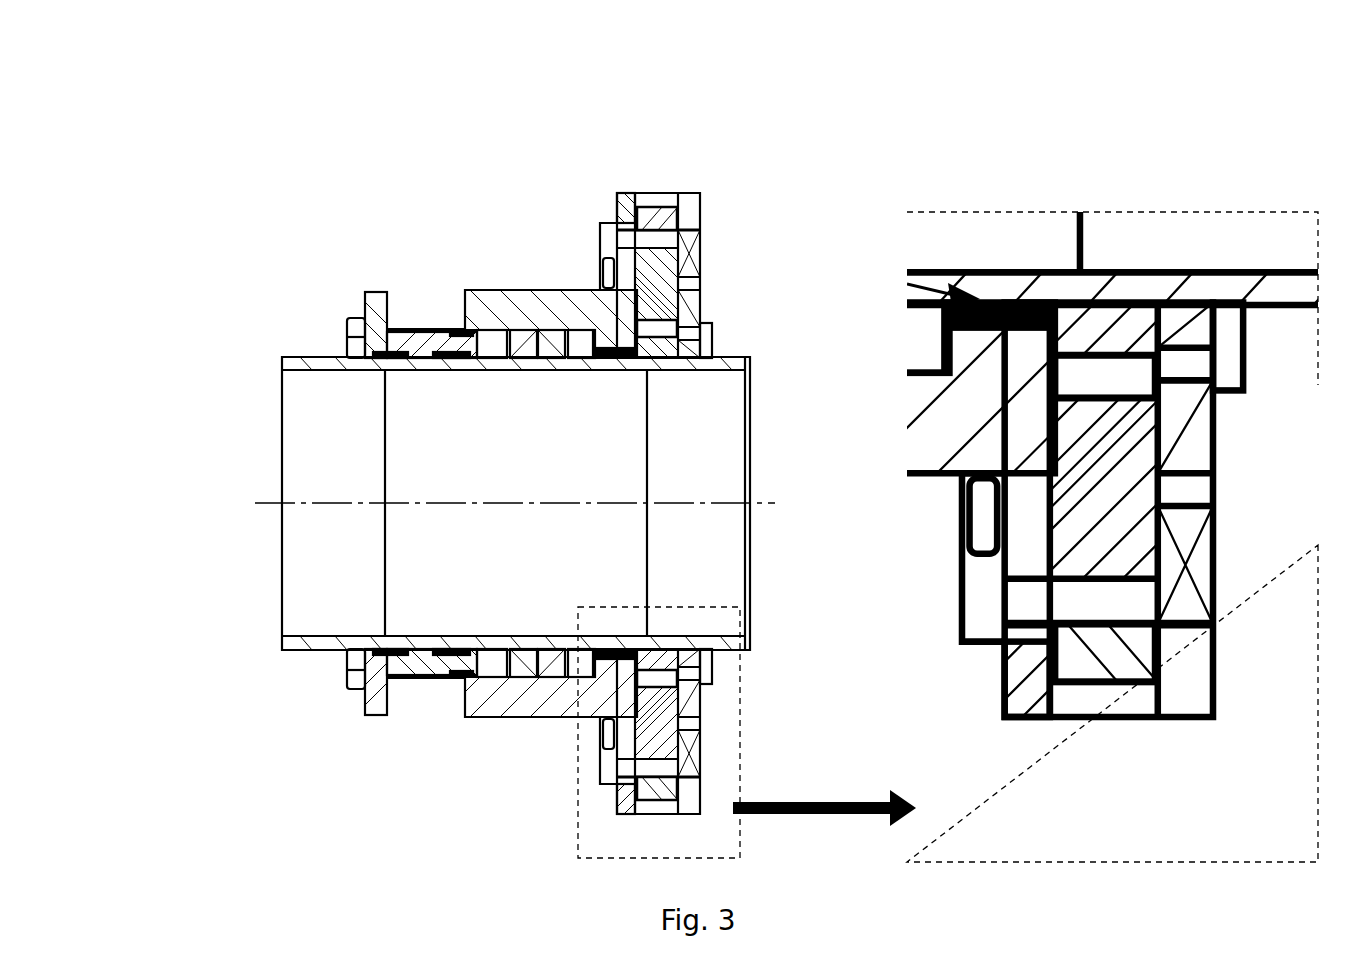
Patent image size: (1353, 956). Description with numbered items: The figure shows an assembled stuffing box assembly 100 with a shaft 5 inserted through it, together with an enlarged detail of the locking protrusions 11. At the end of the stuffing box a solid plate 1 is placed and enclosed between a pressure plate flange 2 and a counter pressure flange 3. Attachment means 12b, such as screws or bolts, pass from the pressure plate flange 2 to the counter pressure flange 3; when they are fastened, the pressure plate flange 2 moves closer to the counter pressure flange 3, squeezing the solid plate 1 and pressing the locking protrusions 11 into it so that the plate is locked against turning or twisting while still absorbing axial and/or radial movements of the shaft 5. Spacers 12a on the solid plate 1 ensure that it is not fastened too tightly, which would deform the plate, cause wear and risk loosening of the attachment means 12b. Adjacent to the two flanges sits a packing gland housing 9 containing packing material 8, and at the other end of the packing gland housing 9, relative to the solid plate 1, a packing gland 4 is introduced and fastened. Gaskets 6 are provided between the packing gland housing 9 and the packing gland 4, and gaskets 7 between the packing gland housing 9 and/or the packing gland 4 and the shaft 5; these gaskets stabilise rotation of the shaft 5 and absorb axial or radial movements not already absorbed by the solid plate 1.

The stuffing box assembly 100 is at (392, 60).
The solid plate 1 is at (703, 727).
The pressure plate flange 2 is at (704, 315).
The counter pressure flange 3 is at (627, 191).
The packing gland 4 is at (357, 723).
The shaft 5 is at (753, 490).
The gaskets 6 is at (456, 327).
The gaskets 7 is at (600, 648).
The packing material 8 is at (535, 685).
The packing gland housing 9 is at (548, 289).
The locking protrusions 11 is at (650, 694).
The spacers 12a is at (1103, 372).
The attachment means 12b is at (667, 240).